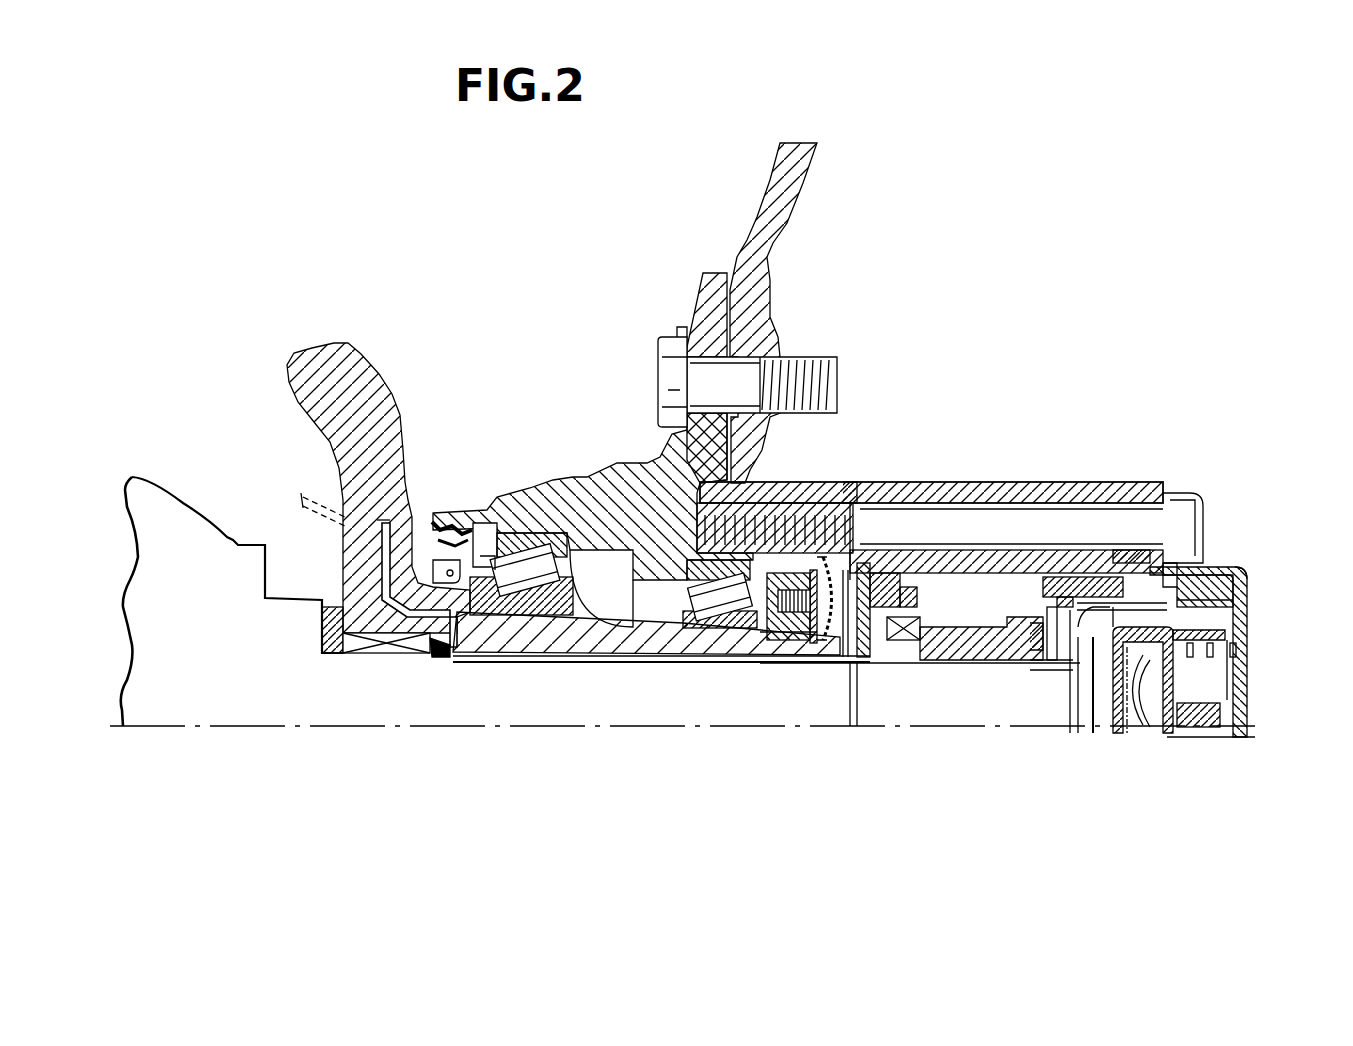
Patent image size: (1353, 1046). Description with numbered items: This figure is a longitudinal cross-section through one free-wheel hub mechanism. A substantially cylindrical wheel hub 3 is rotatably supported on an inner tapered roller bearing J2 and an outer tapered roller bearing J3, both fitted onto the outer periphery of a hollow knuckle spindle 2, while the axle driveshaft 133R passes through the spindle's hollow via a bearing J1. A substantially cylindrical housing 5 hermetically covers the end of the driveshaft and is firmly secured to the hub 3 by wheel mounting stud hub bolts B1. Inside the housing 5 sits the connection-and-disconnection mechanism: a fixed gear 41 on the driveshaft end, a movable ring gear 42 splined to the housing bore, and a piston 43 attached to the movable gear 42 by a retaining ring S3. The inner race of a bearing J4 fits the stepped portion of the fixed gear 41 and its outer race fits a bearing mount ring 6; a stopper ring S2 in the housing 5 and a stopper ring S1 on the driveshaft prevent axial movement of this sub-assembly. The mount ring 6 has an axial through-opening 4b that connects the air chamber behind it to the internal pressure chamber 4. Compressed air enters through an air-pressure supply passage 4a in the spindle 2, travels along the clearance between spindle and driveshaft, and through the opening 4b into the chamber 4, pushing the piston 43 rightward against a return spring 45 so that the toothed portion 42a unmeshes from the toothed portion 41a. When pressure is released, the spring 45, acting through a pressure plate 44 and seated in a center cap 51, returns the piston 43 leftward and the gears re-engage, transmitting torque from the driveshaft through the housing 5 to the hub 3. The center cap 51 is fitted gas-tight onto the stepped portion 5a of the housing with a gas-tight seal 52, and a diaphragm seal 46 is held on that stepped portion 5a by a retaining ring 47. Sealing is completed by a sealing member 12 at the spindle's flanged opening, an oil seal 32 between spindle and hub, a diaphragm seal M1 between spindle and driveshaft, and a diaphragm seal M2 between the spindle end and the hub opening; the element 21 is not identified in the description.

The knuckle spindle 2 is at (597, 648).
The wheel hub 3 is at (582, 495).
The internal pressure chamber 4 is at (960, 597).
The air-pressure supply passage 4a is at (427, 520).
The axial through-opening 4b is at (930, 560).
The housing 5 is at (1008, 493).
The stepped portion 5a is at (1207, 580).
The bearing mount ring 6 is at (870, 560).
The sealing member 12 is at (340, 607).
The spline hub 21 is at (780, 640).
The oil seal 32 is at (437, 533).
The fixed gear 41 is at (963, 660).
The toothed portion 41a is at (1027, 607).
The movable ring gear 42 is at (1090, 593).
The toothed portion 42a is at (1118, 640).
The piston 43 is at (1147, 720).
The pressure plate 44 is at (1223, 617).
The return spring 45 is at (1240, 653).
The diaphragm seal 46 is at (1217, 587).
The retaining ring 47 is at (1183, 573).
The center cap 51 is at (1247, 573).
The gas-tight seal 52 is at (1220, 597).
The axle driveshaft 133R is at (505, 718).
The hub bolt B1 is at (1183, 493).
The bearing J1 is at (387, 652).
The inner tapered roller bearing J2 is at (532, 530).
The outer tapered roller bearing J3 is at (717, 635).
The bearing J4 is at (903, 645).
The diaphragm seal M1 is at (443, 653).
The diaphragm seal M2 is at (848, 647).
The stopper ring S1 is at (1053, 660).
The stopper ring S2 is at (867, 490).
The retaining ring S3 is at (1130, 587).